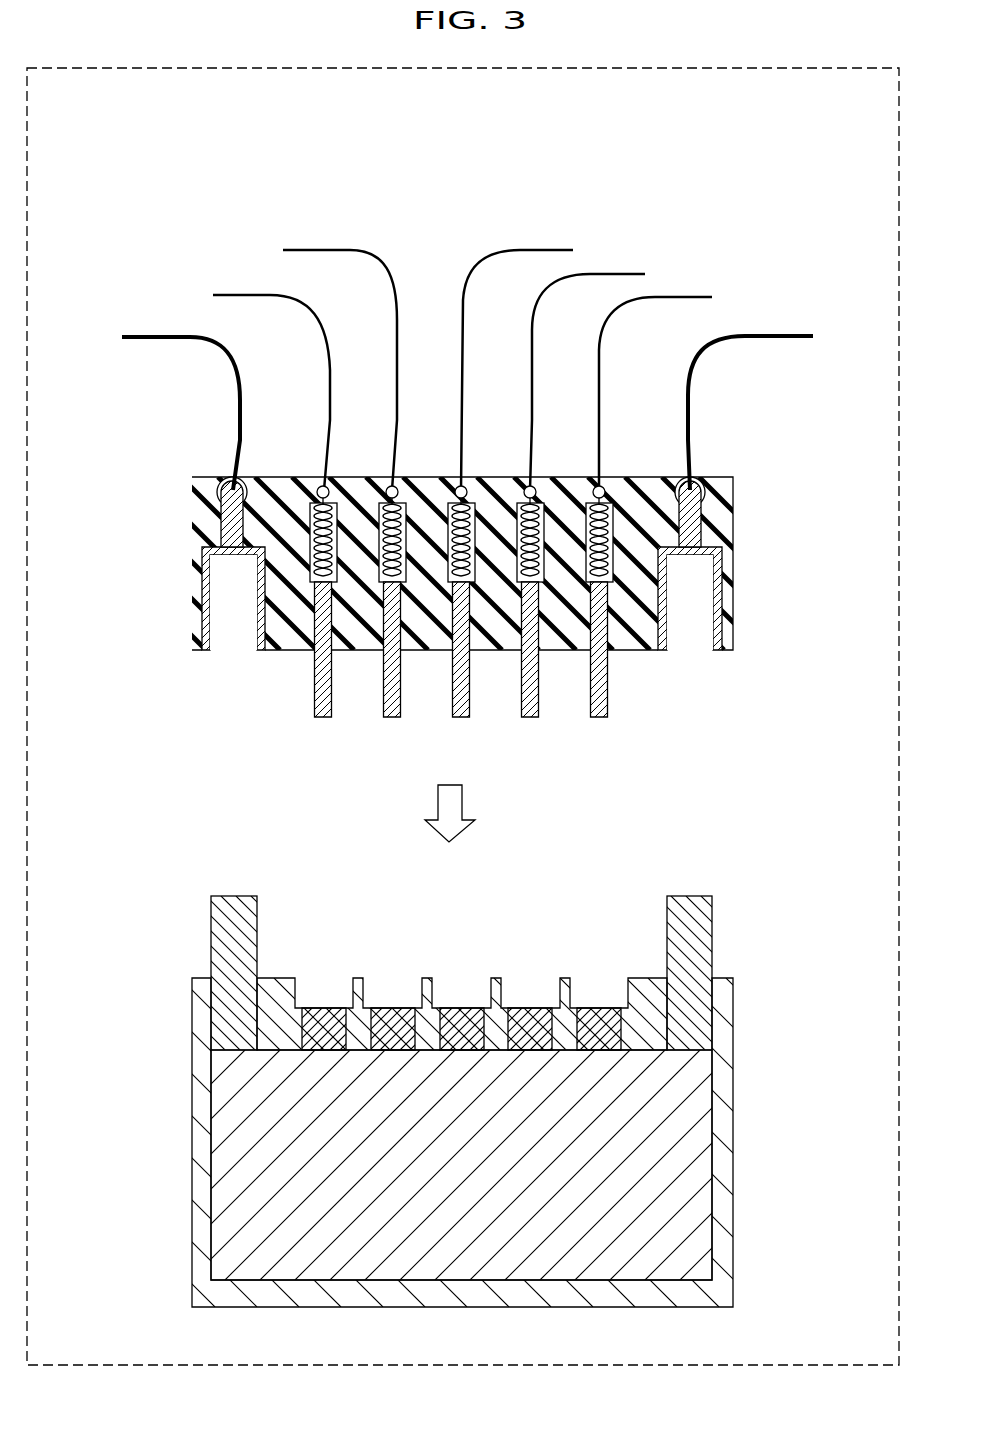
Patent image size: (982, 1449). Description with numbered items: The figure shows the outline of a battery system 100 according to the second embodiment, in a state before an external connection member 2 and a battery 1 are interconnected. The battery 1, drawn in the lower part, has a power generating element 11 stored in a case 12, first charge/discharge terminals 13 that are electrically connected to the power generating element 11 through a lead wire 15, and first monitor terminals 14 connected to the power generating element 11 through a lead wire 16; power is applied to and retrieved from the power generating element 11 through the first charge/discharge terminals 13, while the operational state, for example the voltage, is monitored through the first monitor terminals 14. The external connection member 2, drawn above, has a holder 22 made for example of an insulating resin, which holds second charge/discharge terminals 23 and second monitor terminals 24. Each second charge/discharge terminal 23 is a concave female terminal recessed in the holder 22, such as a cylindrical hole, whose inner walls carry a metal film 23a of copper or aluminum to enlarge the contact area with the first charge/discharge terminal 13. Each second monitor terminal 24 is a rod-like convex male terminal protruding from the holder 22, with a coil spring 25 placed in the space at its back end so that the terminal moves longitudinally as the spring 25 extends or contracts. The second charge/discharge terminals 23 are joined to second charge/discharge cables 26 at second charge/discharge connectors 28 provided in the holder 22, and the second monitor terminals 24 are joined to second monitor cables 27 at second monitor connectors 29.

The battery system 100 is at (168, 145).
The battery 1 is at (768, 861).
The external connection member 2 is at (780, 192).
The power generating element 11 is at (705, 1064).
The case 12 is at (724, 1152).
The first charge/discharge terminal 13 is at (240, 910).
The first monitor terminal 14 is at (311, 988).
The lead wire 15 is at (222, 1000).
The lead wire 16 is at (327, 1024).
The holder 22 is at (724, 477).
The second charge/discharge terminal 23 is at (236, 630).
The metal film 23a is at (202, 598).
The second monitor terminal 24 is at (317, 702).
The spring 25 is at (337, 506).
The second charge/discharge cable 26 is at (122, 332).
The second monitor cable 27 is at (723, 250).
The second charge/discharge connector 28 is at (232, 526).
The second monitor connector 29 is at (328, 487).